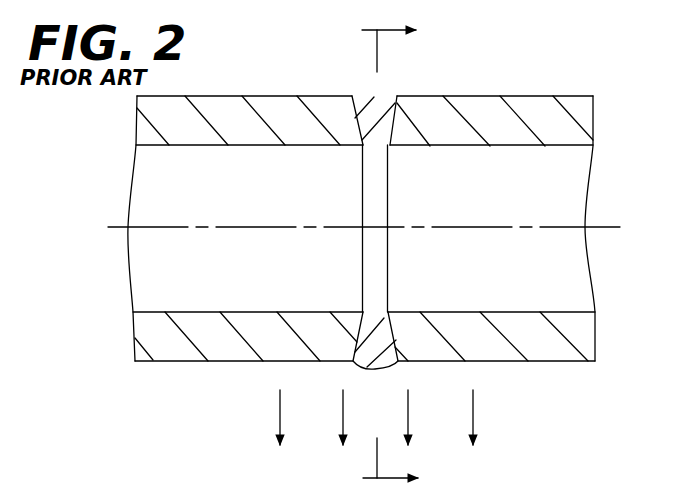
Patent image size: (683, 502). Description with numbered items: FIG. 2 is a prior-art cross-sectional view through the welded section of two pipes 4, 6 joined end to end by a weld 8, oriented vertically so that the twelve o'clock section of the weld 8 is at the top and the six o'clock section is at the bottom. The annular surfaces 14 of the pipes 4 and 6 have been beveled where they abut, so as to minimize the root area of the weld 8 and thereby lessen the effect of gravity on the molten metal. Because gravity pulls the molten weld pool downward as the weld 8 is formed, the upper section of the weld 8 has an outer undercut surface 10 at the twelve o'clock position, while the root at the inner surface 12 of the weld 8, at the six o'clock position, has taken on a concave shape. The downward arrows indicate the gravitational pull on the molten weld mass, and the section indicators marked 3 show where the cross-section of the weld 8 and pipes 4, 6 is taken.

The section line 3- 3 is at (407, 253).
The pipe 4 is at (266, 106).
The pipe 6 is at (544, 96).
The weld 8 is at (376, 148).
The outer undercut surface 10 is at (384, 96).
The inner surface 12 is at (362, 328).
The annular surfaces 14 is at (355, 130).